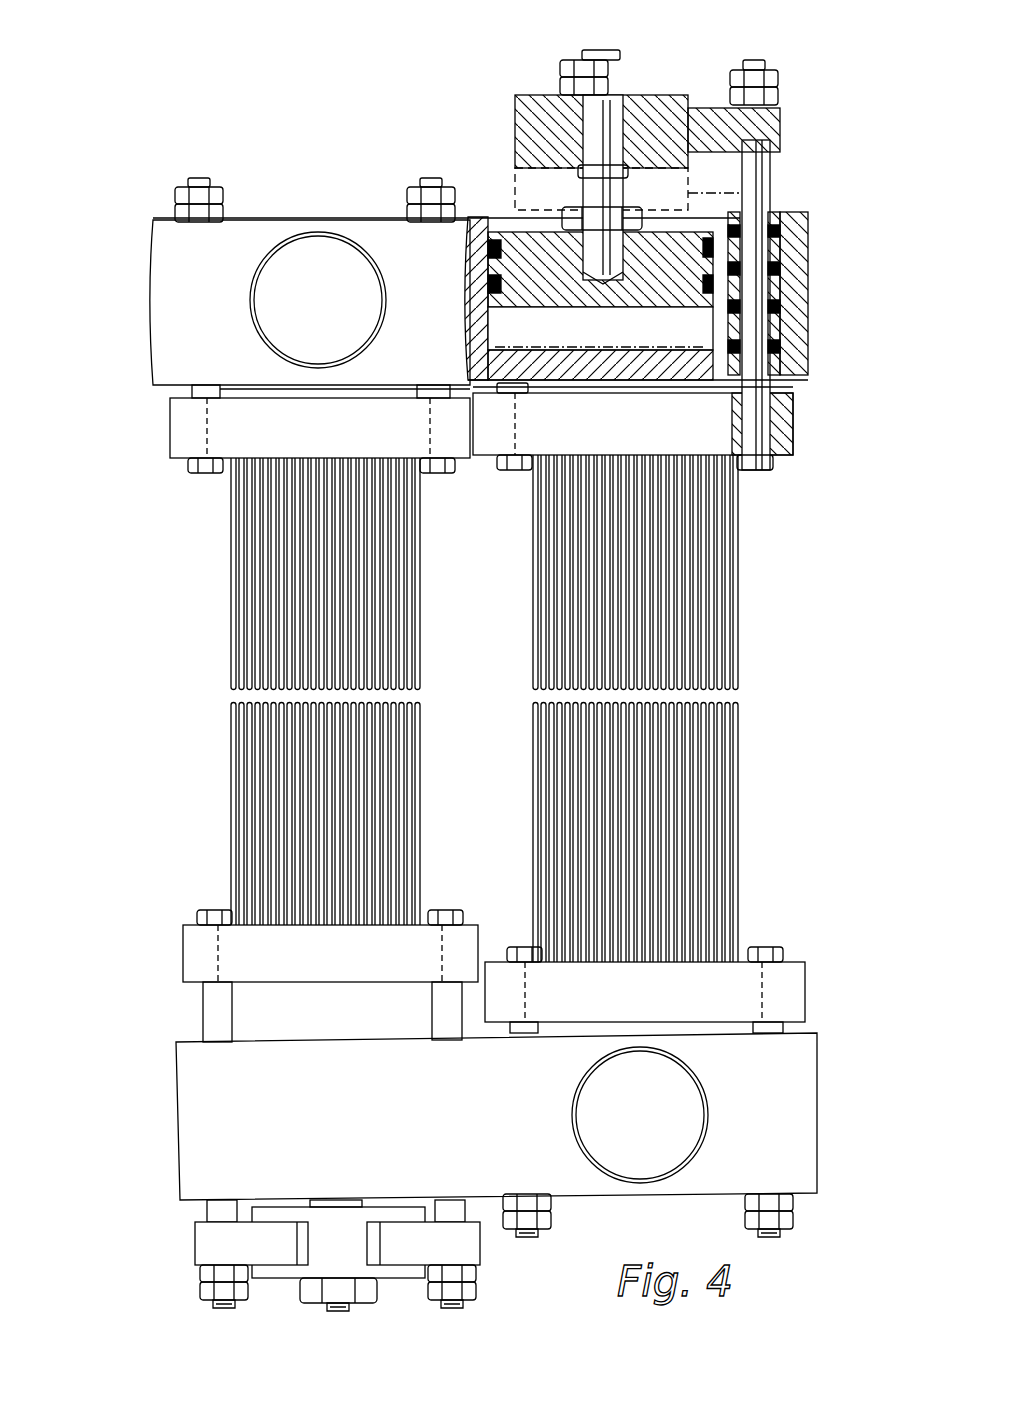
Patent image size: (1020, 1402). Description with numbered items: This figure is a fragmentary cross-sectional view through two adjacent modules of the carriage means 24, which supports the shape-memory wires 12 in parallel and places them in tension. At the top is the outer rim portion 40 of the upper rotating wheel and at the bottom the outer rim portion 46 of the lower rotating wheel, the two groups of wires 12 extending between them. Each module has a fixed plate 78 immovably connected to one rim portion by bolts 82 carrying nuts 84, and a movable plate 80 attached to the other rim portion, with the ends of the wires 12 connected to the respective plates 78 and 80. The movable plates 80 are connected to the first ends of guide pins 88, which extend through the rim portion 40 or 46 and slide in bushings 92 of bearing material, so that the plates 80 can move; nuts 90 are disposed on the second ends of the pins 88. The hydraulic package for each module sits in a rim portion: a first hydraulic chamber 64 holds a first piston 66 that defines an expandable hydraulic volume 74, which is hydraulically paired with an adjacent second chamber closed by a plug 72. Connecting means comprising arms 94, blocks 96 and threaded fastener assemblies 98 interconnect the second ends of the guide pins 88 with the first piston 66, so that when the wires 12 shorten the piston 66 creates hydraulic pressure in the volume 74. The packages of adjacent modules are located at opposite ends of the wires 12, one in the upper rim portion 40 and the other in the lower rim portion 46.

The wires 12 is at (262, 648).
The carriage means 24 is at (145, 208).
The outer rim portion 40 is at (160, 285).
The outer rim portion 46 is at (186, 1110).
The first hydraulic chamber 64 is at (680, 345).
The first piston 66 is at (552, 285).
The closure plug 72 is at (320, 258).
The expandable hydraulic volume 74 is at (628, 325).
The fixed plate 78 is at (185, 440).
The movable plate 80 is at (790, 446).
The bolts 82 is at (205, 472).
The nuts 84 is at (224, 210).
The guide pins 88 is at (762, 197).
The nuts 90 is at (778, 100).
The bushings 92 is at (772, 335).
The arms 94 is at (705, 115).
The blocks 96 is at (532, 102).
The threaded fastener assemblies 98 is at (612, 62).